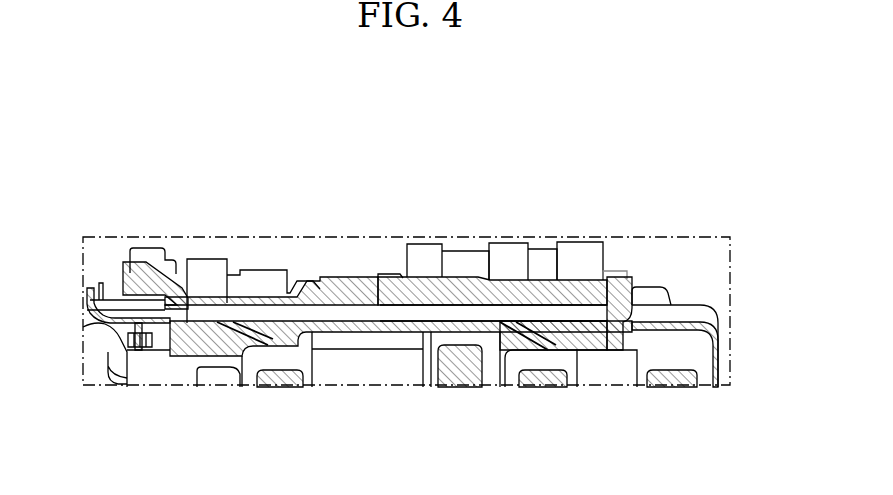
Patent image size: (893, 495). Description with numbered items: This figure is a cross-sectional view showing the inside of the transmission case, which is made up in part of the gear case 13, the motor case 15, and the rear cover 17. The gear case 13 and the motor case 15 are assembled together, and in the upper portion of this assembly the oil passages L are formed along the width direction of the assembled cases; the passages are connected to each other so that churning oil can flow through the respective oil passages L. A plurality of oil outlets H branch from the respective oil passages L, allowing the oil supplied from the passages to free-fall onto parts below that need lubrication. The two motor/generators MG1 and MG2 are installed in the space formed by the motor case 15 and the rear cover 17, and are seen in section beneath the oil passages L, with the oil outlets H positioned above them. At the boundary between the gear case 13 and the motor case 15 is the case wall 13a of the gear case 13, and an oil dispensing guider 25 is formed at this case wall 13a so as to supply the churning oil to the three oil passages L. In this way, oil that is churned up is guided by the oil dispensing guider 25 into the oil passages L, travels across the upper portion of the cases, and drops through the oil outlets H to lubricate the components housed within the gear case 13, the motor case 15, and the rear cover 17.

The gear case 13 is at (346, 292).
The case wall 13a is at (200, 392).
The motor case 15 is at (457, 284).
The rear cover 17 is at (719, 350).
The oil dispensing guider 25 is at (105, 322).
The oil outlet H is at (320, 330).
The oil passage L is at (512, 312).
The motor/generator MG1 is at (550, 379).
The motor/generator MG2 is at (449, 377).